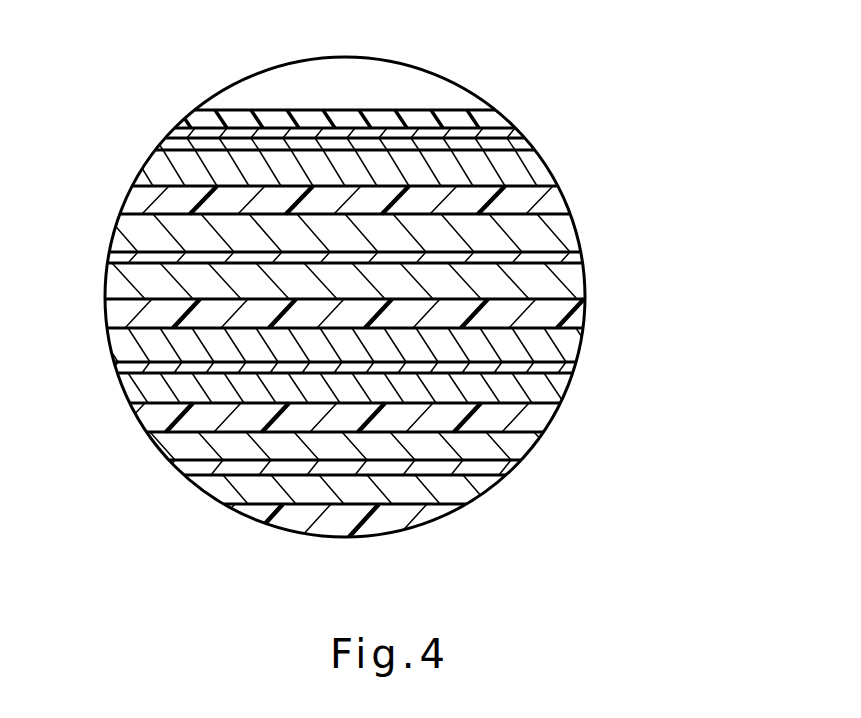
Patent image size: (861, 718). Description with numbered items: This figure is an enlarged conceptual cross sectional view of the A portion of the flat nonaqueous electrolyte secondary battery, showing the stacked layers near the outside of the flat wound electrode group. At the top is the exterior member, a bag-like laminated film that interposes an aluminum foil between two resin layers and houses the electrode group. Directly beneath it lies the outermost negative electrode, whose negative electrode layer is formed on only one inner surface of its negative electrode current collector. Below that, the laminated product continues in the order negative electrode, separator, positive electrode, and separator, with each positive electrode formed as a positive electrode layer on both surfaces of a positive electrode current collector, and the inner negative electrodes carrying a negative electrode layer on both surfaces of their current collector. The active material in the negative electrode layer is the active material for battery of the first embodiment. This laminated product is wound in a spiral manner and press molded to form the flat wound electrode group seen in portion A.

The A portion A is at (234, 99).